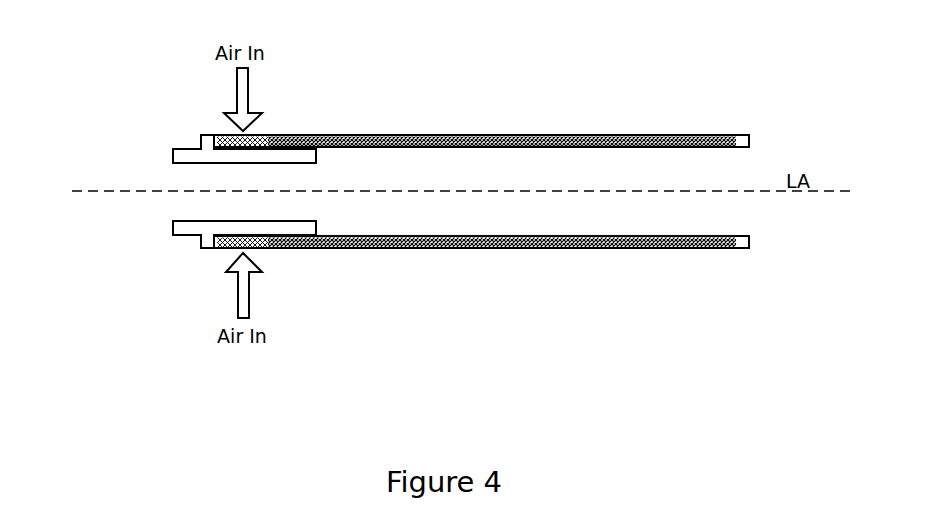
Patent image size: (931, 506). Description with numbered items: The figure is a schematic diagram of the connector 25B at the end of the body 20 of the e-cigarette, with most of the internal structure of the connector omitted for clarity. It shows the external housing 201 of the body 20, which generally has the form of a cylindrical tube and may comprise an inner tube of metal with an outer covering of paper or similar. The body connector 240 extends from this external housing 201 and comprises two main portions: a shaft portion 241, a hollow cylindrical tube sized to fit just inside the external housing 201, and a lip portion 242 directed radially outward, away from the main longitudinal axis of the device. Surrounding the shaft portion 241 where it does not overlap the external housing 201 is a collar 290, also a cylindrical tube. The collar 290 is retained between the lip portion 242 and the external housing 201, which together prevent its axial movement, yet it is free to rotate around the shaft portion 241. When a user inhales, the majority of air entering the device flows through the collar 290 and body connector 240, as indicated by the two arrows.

The body 20 is at (585, 283).
The connector 25B is at (192, 342).
The external housing 201 is at (693, 254).
The body connector 240 is at (195, 157).
The shaft portion 241 is at (299, 228).
The lip portion 242 is at (195, 252).
The collar 290 is at (274, 127).